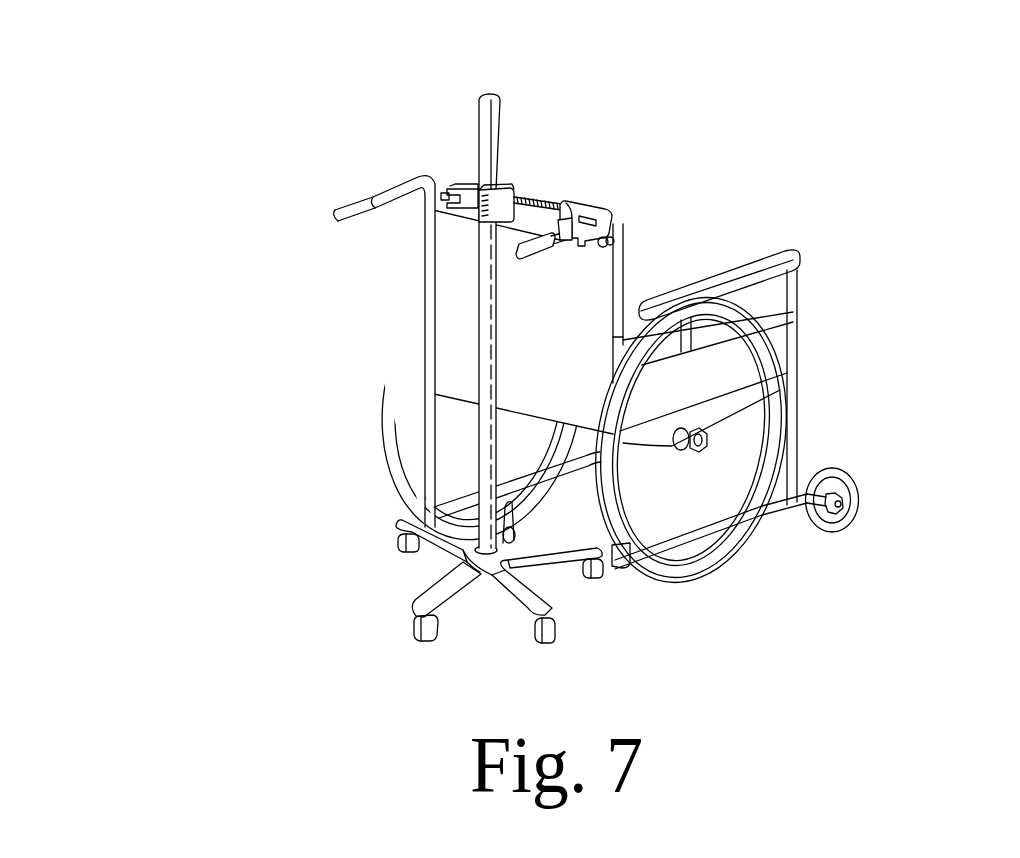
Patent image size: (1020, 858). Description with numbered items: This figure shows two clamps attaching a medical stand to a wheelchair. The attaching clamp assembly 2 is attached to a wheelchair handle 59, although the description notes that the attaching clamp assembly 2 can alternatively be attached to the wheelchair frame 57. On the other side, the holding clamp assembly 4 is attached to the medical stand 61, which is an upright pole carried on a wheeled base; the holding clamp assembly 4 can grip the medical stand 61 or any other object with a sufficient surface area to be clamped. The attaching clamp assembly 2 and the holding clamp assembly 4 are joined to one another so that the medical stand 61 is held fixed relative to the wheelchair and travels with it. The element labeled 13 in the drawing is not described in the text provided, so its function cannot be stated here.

The attaching clamp assembly 2 is at (600, 207).
The holding clamp assembly 4 is at (453, 190).
The wheelchair handle post 13 is at (607, 230).
The wheelchair frame 57 is at (530, 197).
The wheelchair handle 59 is at (598, 240).
The medical stand 61 is at (478, 356).